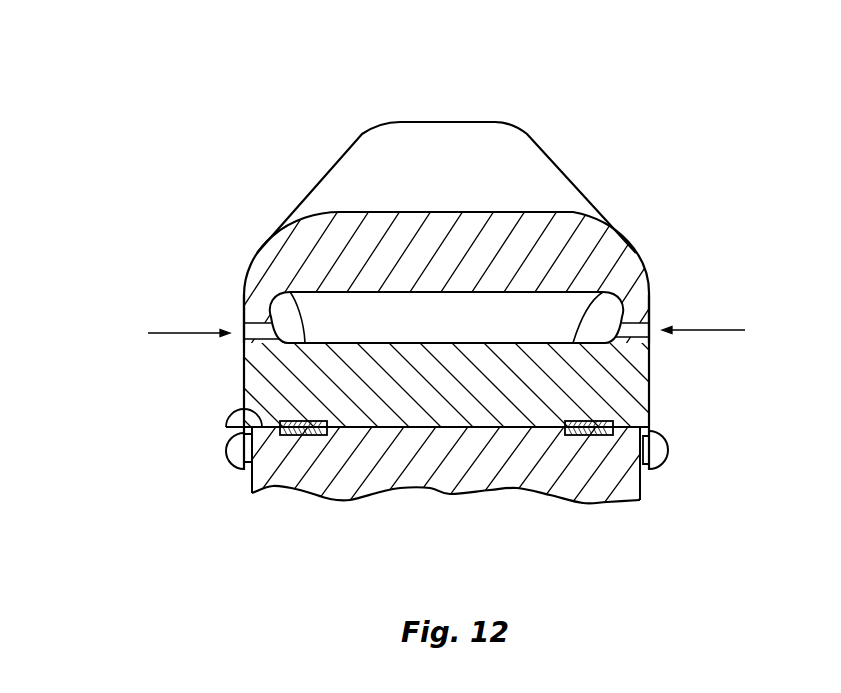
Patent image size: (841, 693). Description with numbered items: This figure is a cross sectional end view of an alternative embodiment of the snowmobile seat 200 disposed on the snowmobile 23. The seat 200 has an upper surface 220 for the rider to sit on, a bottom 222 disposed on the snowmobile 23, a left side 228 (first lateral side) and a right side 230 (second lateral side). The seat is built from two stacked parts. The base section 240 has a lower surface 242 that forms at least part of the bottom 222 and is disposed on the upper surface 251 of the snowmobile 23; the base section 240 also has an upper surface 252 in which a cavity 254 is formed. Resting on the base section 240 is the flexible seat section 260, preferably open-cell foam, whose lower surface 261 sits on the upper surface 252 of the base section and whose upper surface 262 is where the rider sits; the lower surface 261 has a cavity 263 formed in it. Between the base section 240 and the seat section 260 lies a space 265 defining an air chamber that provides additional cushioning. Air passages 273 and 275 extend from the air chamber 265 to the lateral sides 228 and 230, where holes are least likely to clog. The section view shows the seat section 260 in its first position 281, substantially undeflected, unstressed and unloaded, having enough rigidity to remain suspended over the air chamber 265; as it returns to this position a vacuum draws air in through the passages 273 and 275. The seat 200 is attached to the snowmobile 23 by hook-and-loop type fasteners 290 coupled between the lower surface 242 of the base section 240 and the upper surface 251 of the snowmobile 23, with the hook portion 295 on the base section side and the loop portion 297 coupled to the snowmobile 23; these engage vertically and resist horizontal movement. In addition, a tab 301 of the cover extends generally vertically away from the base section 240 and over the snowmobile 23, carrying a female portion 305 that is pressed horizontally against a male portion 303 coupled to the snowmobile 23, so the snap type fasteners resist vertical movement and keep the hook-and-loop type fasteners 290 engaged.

The snowmobile seat 200 is at (165, 259).
The upper surface 220 is at (343, 212).
The lower surface 261 is at (313, 293).
The upper surface 252 is at (300, 307).
The cavity 263 is at (462, 292).
The upper surface 262 is at (523, 212).
The seat section 260 is at (580, 243).
The first position 281 is at (674, 237).
The cavity 254 is at (626, 302).
The air passage 273 is at (652, 324).
The air passage 275 is at (245, 336).
The space 265 is at (379, 331).
The right side 230 is at (243, 378).
The left side 228 is at (652, 388).
The tab 301 is at (664, 426).
The base section 240 is at (243, 411).
The lower surface 242 is at (228, 427).
The female portion 305 is at (652, 444).
The male portion 303 is at (646, 482).
The bottom 222 is at (617, 438).
The loop portion 297 is at (285, 437).
The hook-and-loop type fasteners 290 is at (312, 450).
The hook portion 295 is at (308, 427).
The upper surface 251 is at (475, 440).
The snowmobile 23 is at (581, 486).